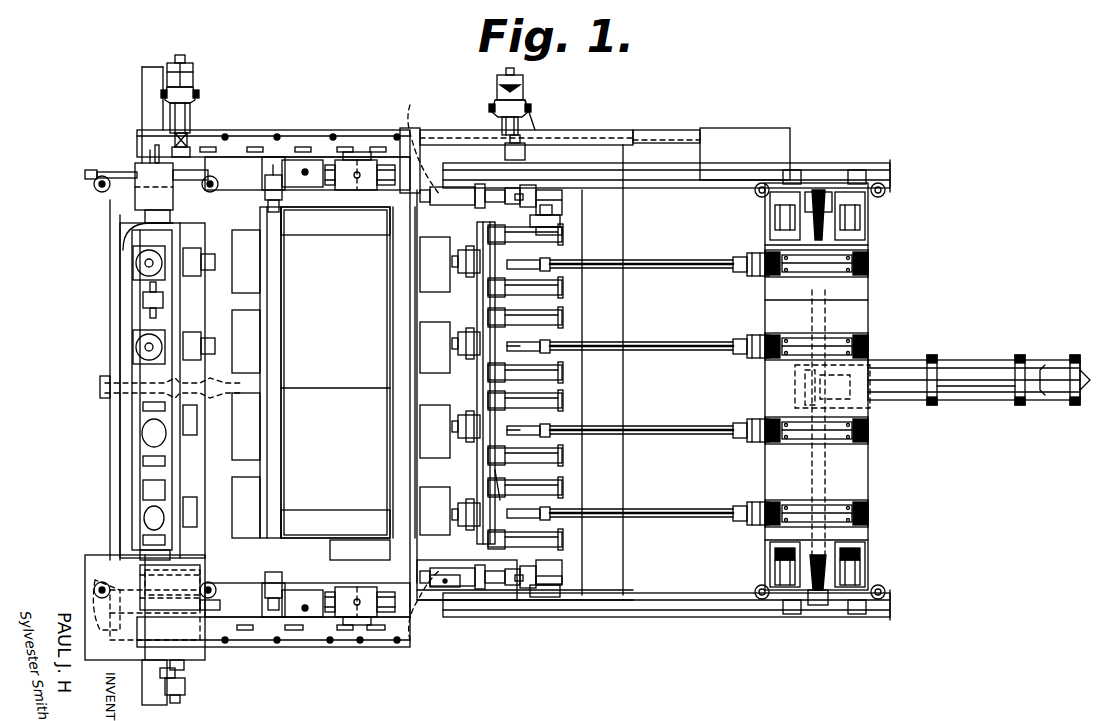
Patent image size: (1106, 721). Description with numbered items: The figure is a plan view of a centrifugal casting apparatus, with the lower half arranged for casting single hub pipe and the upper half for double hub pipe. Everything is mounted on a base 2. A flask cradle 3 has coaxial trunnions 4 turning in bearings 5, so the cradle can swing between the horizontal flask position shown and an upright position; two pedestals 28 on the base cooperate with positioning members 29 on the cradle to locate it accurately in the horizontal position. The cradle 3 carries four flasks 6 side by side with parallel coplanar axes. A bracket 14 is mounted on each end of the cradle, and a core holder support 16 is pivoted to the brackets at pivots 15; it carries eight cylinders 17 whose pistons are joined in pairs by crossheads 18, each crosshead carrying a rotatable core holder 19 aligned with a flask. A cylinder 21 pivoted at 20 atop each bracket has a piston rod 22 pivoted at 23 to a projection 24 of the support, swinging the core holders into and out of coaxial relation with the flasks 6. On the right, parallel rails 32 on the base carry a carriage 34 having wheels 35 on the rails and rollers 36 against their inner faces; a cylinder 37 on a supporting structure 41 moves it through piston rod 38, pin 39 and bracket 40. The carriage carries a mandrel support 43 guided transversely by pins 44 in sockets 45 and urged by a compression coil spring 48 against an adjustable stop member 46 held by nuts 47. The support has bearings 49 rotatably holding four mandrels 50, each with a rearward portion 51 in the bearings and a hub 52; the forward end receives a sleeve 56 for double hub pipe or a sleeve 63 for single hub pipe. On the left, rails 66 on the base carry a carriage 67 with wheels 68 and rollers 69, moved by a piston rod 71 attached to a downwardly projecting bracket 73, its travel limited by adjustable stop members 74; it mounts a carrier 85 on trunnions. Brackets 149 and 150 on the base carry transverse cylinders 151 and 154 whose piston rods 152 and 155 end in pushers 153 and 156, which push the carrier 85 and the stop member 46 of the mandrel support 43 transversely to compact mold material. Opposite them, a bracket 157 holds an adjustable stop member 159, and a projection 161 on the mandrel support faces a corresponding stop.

The base 2 is at (310, 645).
The flask cradle 3 is at (344, 346).
The trunnions 4 is at (368, 160).
The bearings 5 is at (350, 160).
The flasks 6 is at (430, 292).
The bracket 14 is at (340, 190).
The pivots 15 is at (562, 198).
The core holder support 16 is at (475, 390).
The cylinders 17 is at (565, 240).
The crossheads 18 is at (478, 485).
The core holder 19 is at (482, 522).
The pivot 20 is at (424, 379).
The cylinder 21 is at (462, 187).
The piston rod 22 is at (560, 220).
The pivot 23 is at (535, 185).
The projection 24 is at (562, 231).
The pedestals 28 is at (275, 170).
The positioning members 29 is at (265, 185).
The rails 32 is at (652, 170).
The carriage 34 is at (868, 200).
The wheels 35 is at (785, 175).
The rollers 36 is at (755, 192).
The cylinder 37 is at (978, 372).
The piston rod 38 is at (805, 404).
The pin 39 is at (800, 372).
The bracket 40 is at (820, 388).
The supporting structure 41 is at (955, 408).
The mandrel support 43 is at (858, 476).
The pins 44 is at (866, 550).
The sockets 45 is at (866, 567).
The stop member 46 is at (812, 190).
The nuts 47 is at (828, 195).
The compression coil spring 48 is at (812, 570).
The bearings 49 is at (770, 278).
The mandrel 50 is at (645, 268).
The rearward portion 51 is at (815, 285).
The hub 52 is at (742, 277).
The sleeve 56 is at (540, 340).
The sleeve 63 is at (545, 428).
The rails 66 is at (90, 176).
The carriage 67 is at (118, 464).
The wheels 68 is at (130, 165).
The rollers 69 is at (100, 192).
The piston rod 71 is at (140, 398).
The bracket 73 is at (100, 387).
The stop members 74 is at (120, 258).
The carrier 85 is at (140, 433).
The bracket 149 is at (198, 92).
The bracket 150 is at (523, 82).
The cylinder 151 is at (193, 70).
The piston rod 152 is at (187, 135).
The pusher 153 is at (172, 150).
The cylinder 154 is at (525, 108).
The piston rod 155 is at (520, 125).
The pusher 156 is at (505, 148).
The bracket 157 is at (186, 683).
The stop member 159 is at (185, 664).
The projection 161 is at (816, 605).